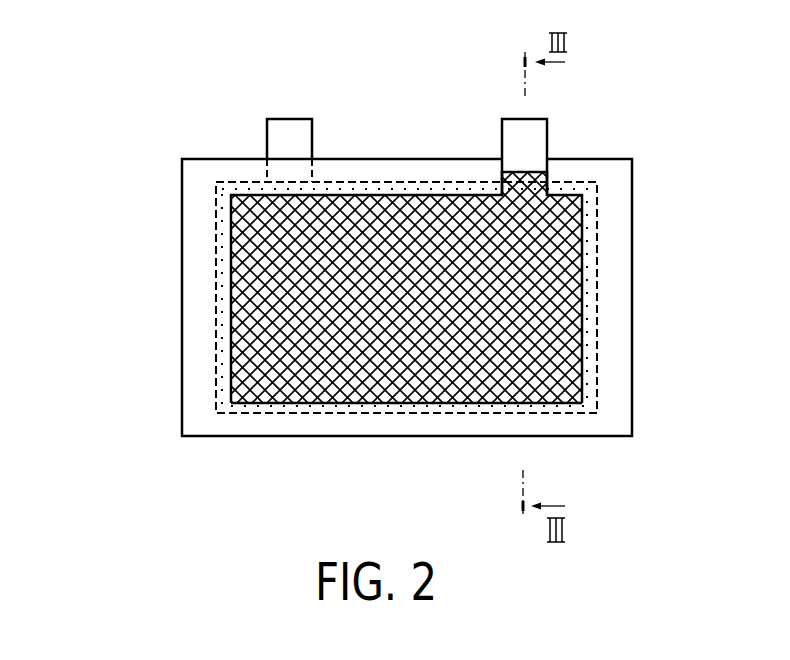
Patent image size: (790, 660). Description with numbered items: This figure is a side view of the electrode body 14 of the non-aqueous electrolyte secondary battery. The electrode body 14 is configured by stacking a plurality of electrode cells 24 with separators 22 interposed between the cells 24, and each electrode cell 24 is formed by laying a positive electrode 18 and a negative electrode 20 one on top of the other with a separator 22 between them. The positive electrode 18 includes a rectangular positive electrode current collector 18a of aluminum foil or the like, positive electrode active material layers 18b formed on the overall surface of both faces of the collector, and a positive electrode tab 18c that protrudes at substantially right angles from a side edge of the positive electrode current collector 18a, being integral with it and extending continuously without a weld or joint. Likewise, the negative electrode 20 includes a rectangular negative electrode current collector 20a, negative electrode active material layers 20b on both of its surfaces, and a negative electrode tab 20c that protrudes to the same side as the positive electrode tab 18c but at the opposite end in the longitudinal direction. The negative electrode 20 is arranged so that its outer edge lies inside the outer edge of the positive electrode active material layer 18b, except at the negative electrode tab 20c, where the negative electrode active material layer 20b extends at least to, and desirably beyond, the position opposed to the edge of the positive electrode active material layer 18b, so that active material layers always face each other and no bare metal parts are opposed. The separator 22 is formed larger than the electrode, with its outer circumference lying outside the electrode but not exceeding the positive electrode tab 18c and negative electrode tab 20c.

The electrode body 14 is at (131, 160).
The positive electrode 18 is at (600, 371).
The positive electrode current collector 18a is at (217, 233).
The positive electrode active material layer 18b is at (223, 278).
The positive electrode tab 18c is at (288, 130).
The negative electrode 20 is at (275, 417).
The negative electrode current collector 20a is at (402, 410).
The negative electrode active material layer 20b is at (337, 370).
The negative electrode tab 20c is at (535, 138).
The separator 22 is at (617, 238).
The electrode cell 24 is at (137, 342).